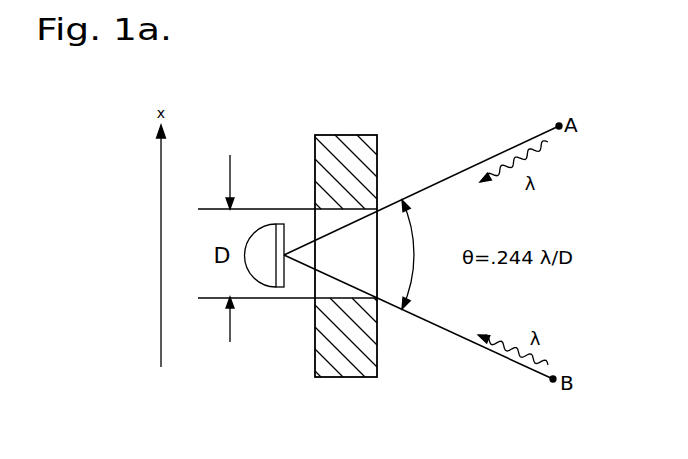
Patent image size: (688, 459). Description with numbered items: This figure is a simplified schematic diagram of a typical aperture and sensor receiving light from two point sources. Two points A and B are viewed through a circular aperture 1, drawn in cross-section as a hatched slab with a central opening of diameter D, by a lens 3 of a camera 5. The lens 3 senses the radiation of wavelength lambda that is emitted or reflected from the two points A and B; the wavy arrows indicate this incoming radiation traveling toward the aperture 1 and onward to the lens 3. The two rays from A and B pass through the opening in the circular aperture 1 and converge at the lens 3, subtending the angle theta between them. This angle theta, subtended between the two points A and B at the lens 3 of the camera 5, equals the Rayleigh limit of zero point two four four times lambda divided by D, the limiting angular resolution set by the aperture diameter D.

The circular aperture 1 is at (316, 153).
The lens 3 is at (283, 225).
The camera 5 is at (264, 287).